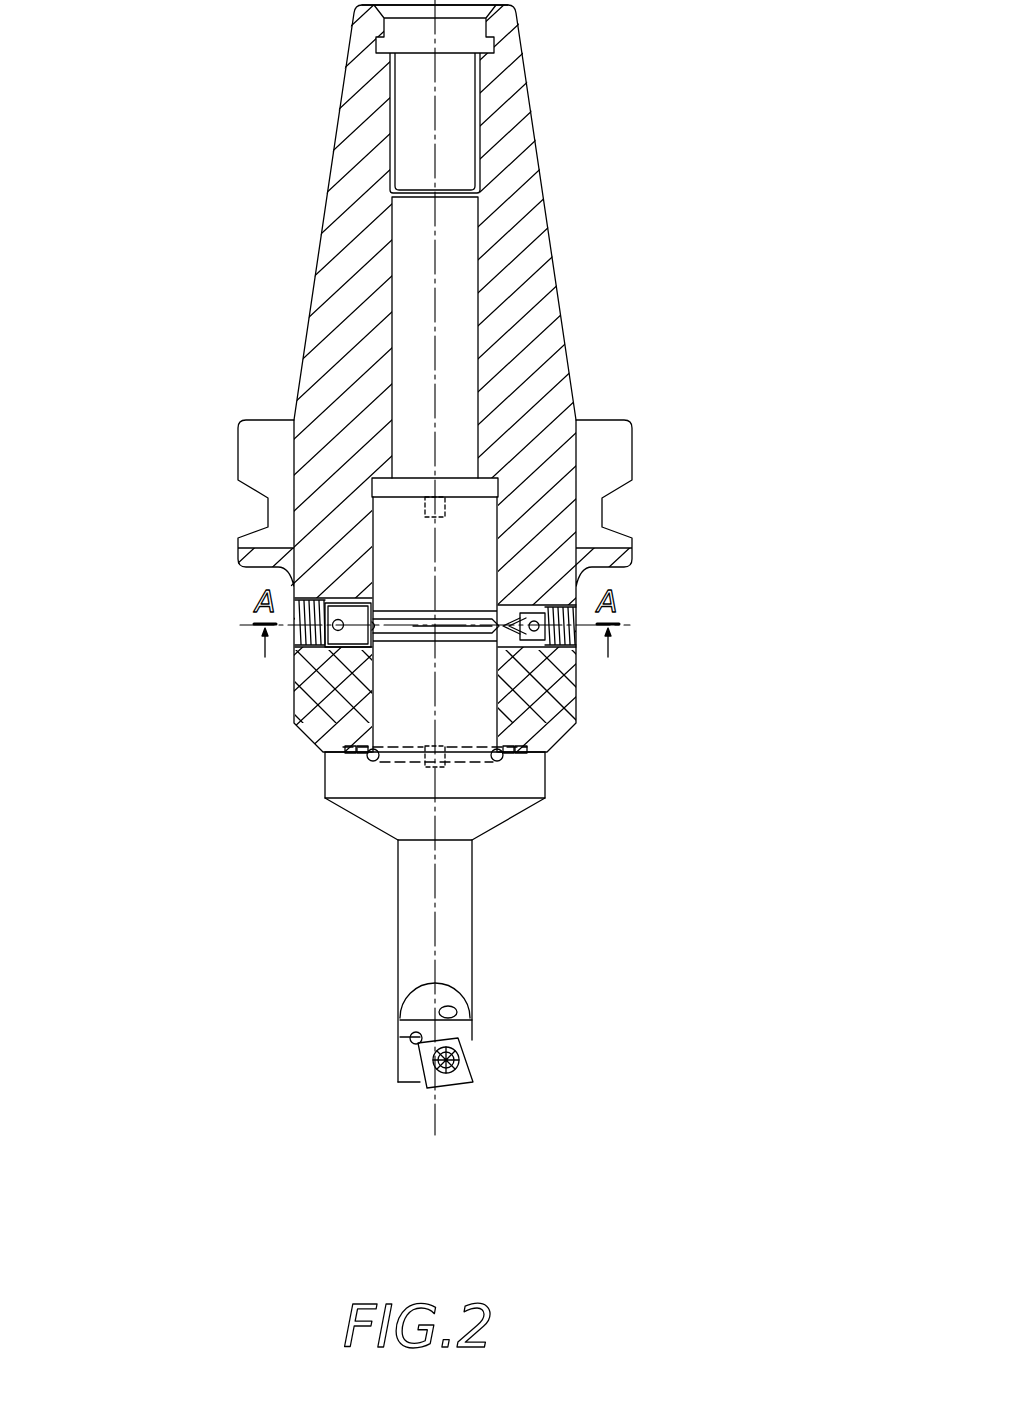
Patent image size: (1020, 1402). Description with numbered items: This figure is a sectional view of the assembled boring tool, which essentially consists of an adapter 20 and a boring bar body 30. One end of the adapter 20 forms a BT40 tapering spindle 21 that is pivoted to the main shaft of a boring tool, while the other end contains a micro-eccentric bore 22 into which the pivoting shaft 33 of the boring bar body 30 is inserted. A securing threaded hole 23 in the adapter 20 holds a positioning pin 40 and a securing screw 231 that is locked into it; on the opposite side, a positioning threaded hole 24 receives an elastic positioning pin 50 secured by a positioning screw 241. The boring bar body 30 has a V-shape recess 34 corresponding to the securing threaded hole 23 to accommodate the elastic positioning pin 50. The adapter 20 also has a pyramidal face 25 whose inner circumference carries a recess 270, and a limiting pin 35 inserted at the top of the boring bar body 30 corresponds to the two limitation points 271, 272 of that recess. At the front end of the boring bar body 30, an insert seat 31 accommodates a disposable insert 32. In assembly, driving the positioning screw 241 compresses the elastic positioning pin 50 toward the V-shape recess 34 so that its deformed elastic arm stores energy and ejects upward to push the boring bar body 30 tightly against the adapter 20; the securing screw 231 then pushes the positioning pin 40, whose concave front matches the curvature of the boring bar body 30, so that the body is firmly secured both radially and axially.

The adapter 20 is at (612, 335).
The tapering spindle 21 is at (530, 188).
The micro-eccentric bore 22 is at (503, 568).
The securing threaded hole 23 is at (332, 596).
The securing screw 231 is at (305, 631).
The positioning threaded hole 24 is at (535, 645).
The positioning screw 241 is at (575, 635).
The pyramidal face 25 is at (323, 753).
The recess 270 is at (545, 742).
The limitation point 271 is at (358, 746).
The limitation point 272 is at (518, 753).
The boring bar body 30 is at (484, 903).
The insert seat 31 is at (415, 1075).
The disposable insert 32 is at (465, 1085).
The pivoting shaft 33 is at (460, 547).
The V-shape recess 34 is at (405, 628).
The limiting pin 35 is at (433, 768).
The positioning pin 40 is at (343, 650).
The elastic positioning pin 50 is at (524, 640).